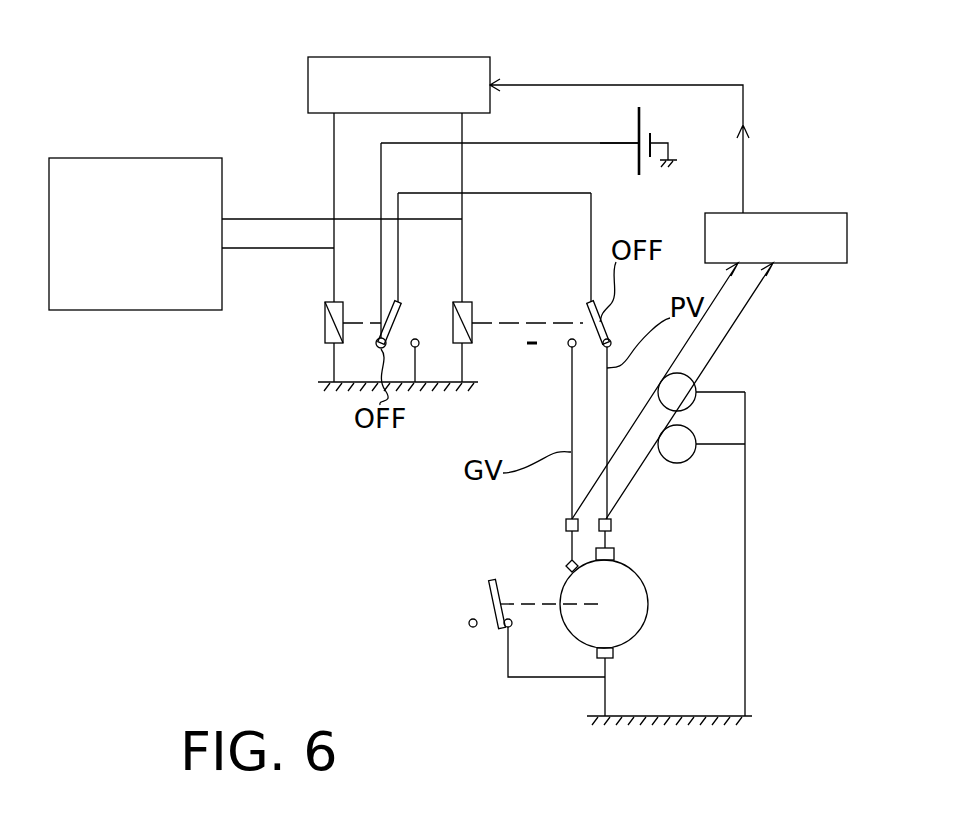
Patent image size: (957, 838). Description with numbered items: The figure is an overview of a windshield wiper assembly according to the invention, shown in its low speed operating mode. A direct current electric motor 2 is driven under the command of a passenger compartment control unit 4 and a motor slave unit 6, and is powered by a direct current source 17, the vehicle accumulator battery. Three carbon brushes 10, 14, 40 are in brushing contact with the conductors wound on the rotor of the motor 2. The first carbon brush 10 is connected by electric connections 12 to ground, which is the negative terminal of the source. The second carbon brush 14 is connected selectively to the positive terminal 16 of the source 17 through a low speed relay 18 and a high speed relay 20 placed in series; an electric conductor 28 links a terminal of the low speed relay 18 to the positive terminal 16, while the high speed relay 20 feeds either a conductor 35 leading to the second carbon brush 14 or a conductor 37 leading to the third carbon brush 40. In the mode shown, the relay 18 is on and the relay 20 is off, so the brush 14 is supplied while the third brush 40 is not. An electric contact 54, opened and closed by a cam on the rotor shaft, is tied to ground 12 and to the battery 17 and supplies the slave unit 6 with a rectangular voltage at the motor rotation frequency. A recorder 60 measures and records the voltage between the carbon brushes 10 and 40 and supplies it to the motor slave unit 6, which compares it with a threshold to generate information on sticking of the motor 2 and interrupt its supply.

The direct current electric motor 2 is at (663, 609).
The passenger compartment control unit 4 is at (122, 311).
The motor slave unit 6 is at (492, 70).
The first carbon brush 10 is at (614, 652).
The electric connections to ground 12 is at (670, 162).
The second carbon brush 14 is at (614, 556).
The positive terminal 16 is at (614, 141).
The direct current source 17 is at (663, 116).
The low speed relay 18 is at (317, 291).
The high speed relay 20 is at (480, 294).
The electric conductor 28 is at (527, 143).
The conductor 35 is at (608, 417).
The conductor 37 is at (571, 395).
The third carbon brush 40 is at (565, 568).
The electric contact 54 is at (488, 622).
The recorder 60 is at (795, 212).